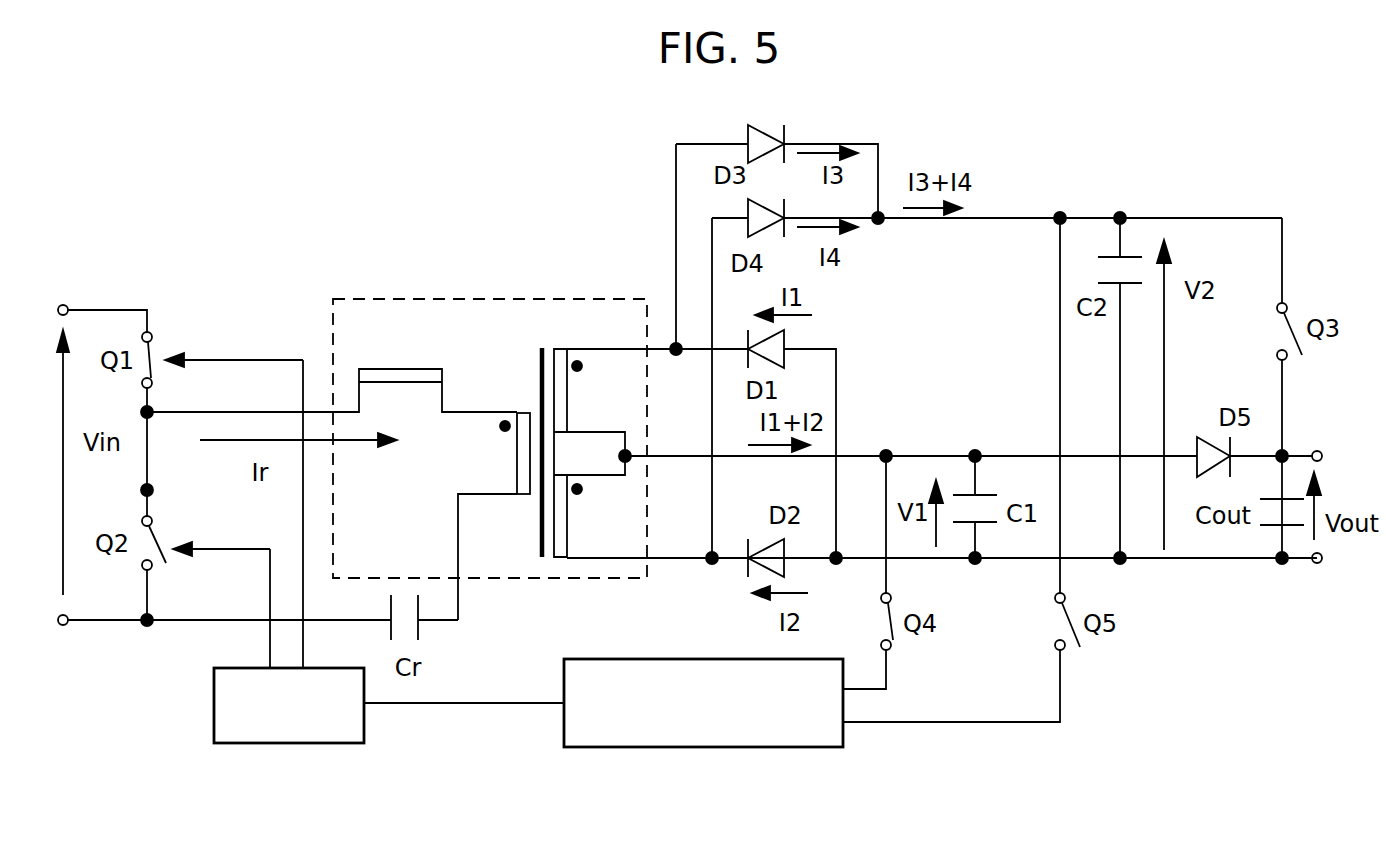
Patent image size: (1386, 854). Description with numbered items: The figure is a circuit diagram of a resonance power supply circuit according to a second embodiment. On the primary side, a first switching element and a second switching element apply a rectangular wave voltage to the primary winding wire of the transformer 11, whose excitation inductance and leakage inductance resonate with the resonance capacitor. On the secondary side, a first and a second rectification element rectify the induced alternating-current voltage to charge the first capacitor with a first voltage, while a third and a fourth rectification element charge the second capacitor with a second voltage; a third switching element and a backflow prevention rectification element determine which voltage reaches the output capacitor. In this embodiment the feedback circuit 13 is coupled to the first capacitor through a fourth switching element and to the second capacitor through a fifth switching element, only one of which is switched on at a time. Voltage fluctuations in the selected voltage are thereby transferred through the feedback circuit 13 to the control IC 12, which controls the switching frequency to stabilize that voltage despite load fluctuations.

The transformer 11 is at (465, 298).
The control integrated circuit (IC) 12 is at (292, 743).
The feedback circuit 13 is at (712, 747).